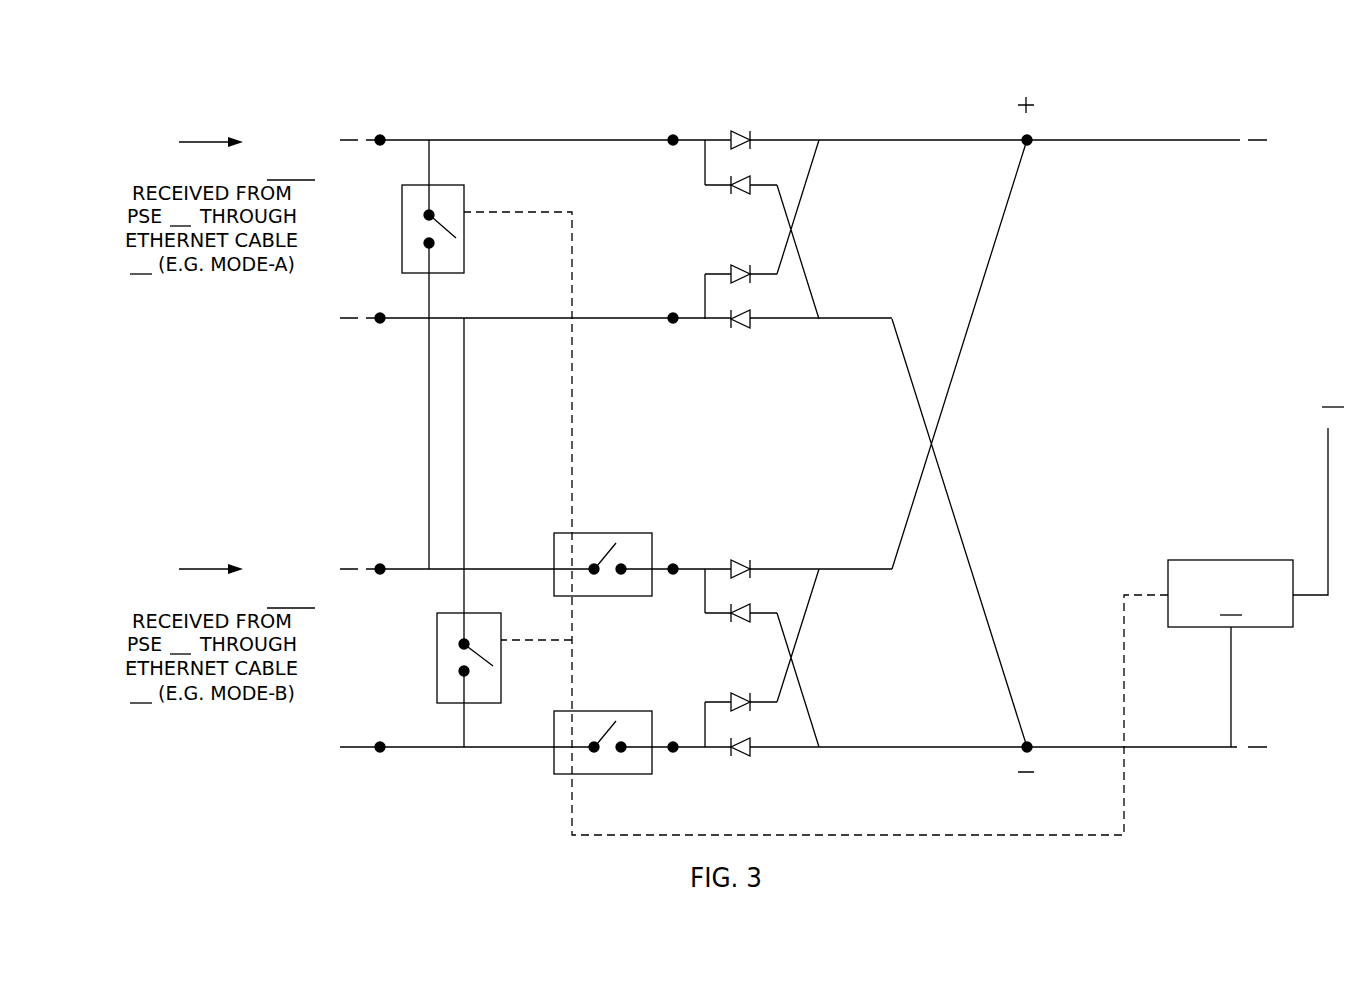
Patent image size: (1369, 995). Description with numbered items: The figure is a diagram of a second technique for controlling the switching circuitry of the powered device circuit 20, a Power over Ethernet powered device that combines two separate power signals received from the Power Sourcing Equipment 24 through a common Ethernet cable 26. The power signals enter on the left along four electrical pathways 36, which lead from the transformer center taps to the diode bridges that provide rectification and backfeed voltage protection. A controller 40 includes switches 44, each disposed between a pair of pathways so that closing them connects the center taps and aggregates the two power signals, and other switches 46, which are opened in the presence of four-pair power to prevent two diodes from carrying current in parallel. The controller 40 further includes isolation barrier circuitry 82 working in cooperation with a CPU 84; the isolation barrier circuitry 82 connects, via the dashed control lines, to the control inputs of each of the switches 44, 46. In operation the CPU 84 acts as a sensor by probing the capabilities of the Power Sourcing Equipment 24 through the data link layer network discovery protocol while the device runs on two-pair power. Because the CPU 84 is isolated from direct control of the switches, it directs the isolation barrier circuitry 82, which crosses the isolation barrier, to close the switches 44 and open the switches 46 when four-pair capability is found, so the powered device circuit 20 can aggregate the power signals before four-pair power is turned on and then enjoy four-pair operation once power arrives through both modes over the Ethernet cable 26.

The powered device circuit 20 is at (1301, 74).
The Power Sourcing Equipment 24 is at (180, 430).
The Ethernet cable 26 is at (141, 478).
The electrical pathways 36 is at (659, 59).
The controller 40 is at (1179, 368).
The switches 44 is at (464, 112).
The switches 46 is at (659, 461).
The isolation barrier circuitry 82 is at (878, 523).
The CPU 84 is at (1323, 478).